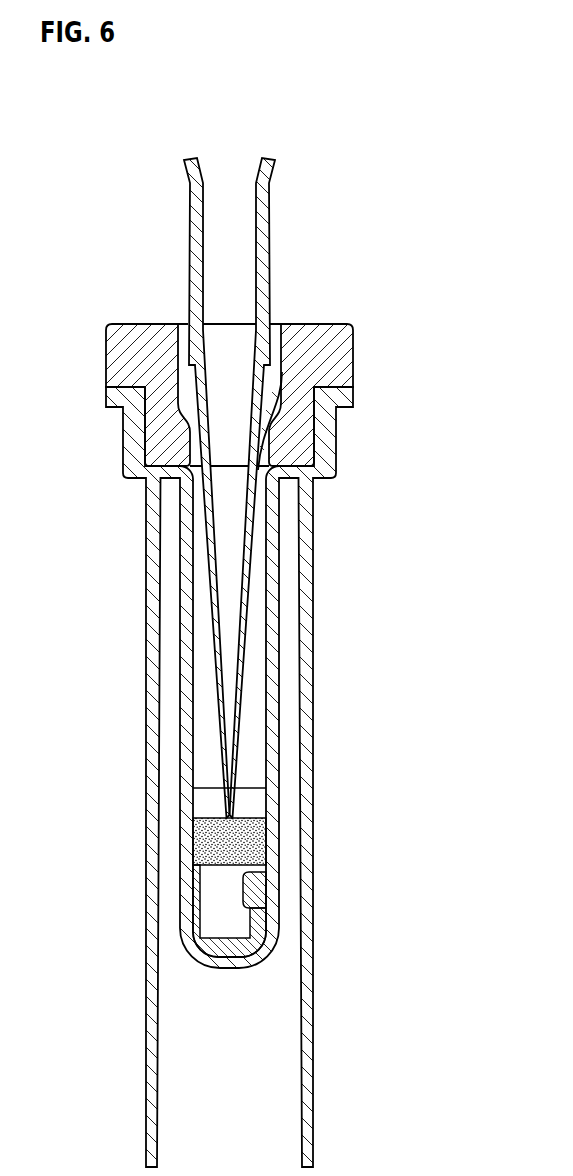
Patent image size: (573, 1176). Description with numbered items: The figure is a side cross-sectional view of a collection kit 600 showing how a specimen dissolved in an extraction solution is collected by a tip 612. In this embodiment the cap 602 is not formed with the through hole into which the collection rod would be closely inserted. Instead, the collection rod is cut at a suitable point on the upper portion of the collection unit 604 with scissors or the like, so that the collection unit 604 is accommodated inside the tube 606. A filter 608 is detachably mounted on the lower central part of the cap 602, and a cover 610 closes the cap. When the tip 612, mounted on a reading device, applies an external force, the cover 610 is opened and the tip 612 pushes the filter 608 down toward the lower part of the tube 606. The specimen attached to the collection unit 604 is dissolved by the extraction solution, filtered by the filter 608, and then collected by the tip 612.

The collection kit 600 is at (413, 203).
The cap 602 is at (322, 324).
The collection unit 604 is at (268, 890).
The tube 606 is at (315, 605).
The filter 608 is at (193, 837).
The cover 610 is at (263, 400).
The tip 612 is at (266, 233).